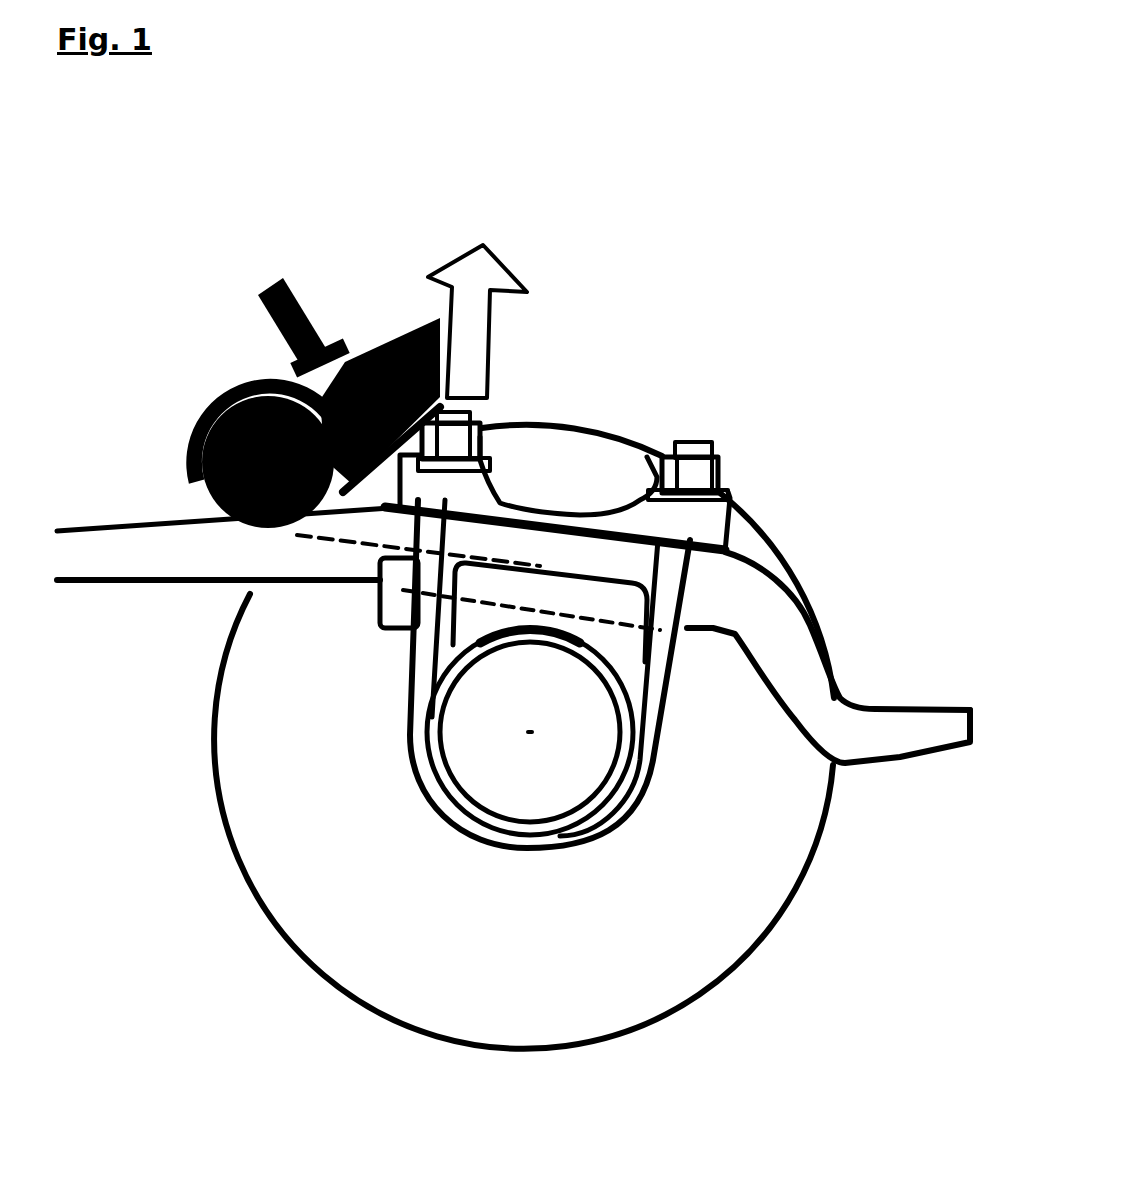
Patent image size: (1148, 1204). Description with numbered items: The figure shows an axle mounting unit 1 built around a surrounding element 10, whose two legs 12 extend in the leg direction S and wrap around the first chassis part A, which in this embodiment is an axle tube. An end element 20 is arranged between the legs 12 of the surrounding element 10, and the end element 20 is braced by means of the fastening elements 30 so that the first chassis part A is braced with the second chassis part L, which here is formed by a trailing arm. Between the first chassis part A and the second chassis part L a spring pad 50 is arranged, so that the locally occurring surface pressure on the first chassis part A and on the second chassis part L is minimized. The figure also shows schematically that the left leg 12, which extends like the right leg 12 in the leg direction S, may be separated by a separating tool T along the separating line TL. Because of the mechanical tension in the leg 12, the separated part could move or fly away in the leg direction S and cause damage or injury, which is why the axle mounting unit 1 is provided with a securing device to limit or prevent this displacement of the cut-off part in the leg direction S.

The axle mounting unit 1 is at (658, 317).
The surrounding element 10 is at (532, 845).
The legs 12 is at (422, 633).
The end element 20 is at (677, 518).
The fastening elements 30 is at (452, 440).
The spring pad 50 is at (620, 632).
The first chassis part A is at (520, 720).
The second chassis part L is at (847, 737).
The leg direction S is at (493, 340).
The separating tool T is at (373, 357).
The separating line TL is at (303, 537).